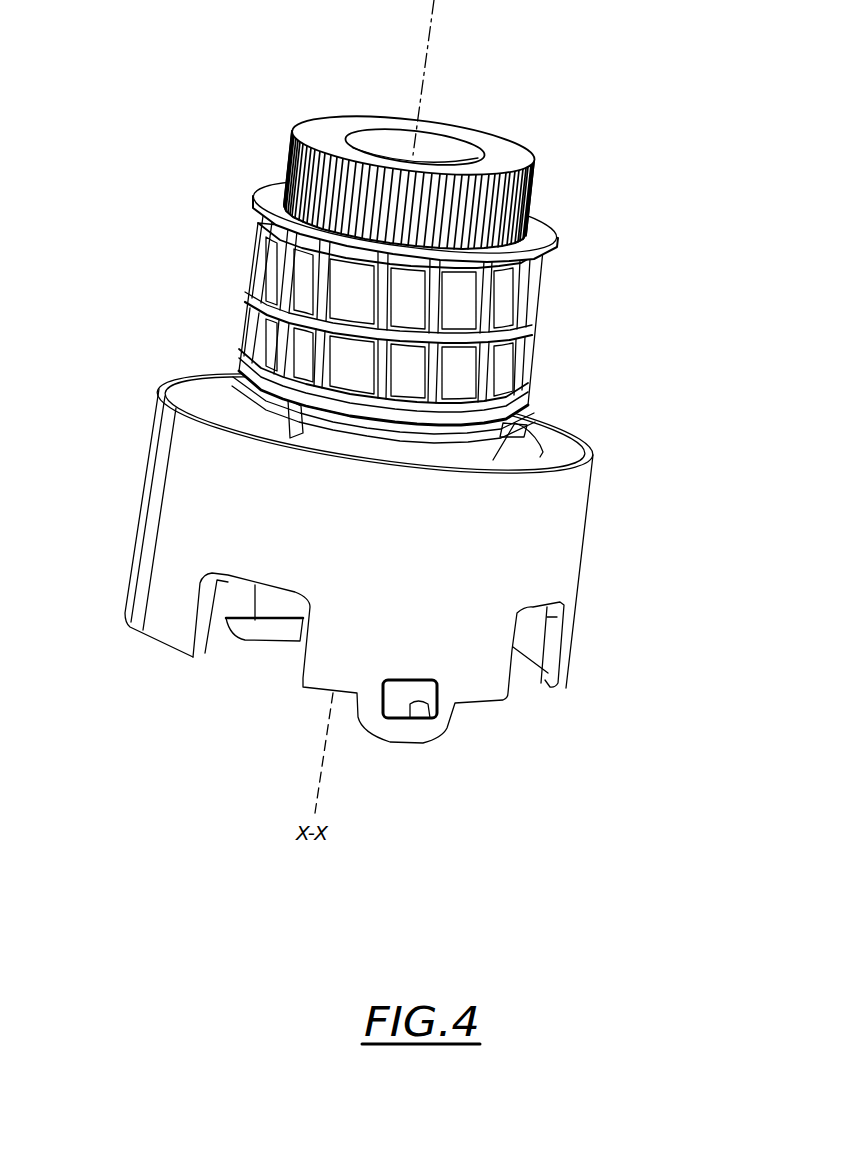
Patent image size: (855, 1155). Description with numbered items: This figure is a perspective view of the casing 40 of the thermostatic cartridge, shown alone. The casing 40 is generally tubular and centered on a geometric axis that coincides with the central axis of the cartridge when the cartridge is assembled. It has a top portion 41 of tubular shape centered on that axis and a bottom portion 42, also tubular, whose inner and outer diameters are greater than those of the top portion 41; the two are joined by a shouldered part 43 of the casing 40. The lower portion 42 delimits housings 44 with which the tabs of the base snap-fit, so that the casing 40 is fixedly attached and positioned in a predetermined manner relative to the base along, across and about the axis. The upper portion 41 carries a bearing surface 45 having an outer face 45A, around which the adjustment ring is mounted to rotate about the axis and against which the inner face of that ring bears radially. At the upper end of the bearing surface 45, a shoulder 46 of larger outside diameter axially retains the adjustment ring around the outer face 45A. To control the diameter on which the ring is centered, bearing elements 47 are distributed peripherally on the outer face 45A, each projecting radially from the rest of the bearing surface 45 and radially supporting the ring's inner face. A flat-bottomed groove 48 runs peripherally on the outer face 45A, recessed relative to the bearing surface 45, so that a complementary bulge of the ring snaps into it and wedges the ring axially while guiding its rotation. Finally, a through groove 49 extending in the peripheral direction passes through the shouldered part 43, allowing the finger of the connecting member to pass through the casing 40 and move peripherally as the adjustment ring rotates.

The casing 40 is at (146, 405).
The top portion 41 is at (530, 384).
The bottom portion 42 is at (583, 538).
The shouldered part 43 is at (555, 450).
The housings 44 is at (417, 710).
The bearing surface 45 is at (288, 262).
The outer face 45A is at (558, 338).
The shoulder 46 is at (550, 242).
The bearing elements 47 is at (540, 292).
The groove 48 is at (214, 386).
The through groove 49 is at (337, 441).